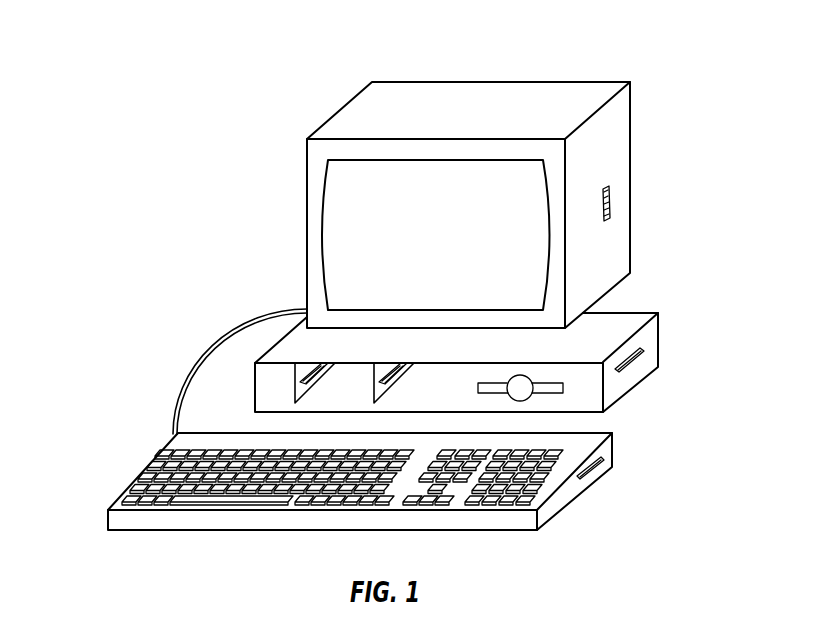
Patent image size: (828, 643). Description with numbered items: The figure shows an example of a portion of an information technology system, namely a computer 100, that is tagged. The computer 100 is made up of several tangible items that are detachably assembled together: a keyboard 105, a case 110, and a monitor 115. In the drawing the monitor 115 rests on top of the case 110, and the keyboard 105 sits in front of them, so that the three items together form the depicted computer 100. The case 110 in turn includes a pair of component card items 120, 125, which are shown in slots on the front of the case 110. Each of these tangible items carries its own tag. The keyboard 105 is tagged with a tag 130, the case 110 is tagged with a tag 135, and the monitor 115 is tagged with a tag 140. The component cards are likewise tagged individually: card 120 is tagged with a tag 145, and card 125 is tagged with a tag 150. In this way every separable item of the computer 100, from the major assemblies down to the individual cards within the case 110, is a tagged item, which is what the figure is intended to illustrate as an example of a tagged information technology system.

The computer 100 is at (284, 40).
The keyboard 105 is at (132, 480).
The case 110 is at (272, 398).
The monitor 115 is at (307, 213).
The component card item 120 is at (303, 388).
The component card item 125 is at (382, 388).
The tag 130 is at (602, 457).
The tag 135 is at (641, 352).
The tag 140 is at (608, 189).
The tag 145 is at (333, 364).
The tag 150 is at (412, 365).